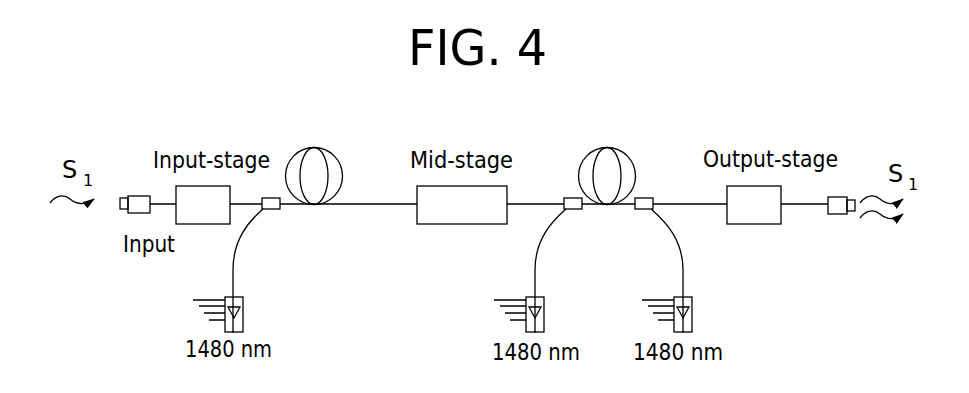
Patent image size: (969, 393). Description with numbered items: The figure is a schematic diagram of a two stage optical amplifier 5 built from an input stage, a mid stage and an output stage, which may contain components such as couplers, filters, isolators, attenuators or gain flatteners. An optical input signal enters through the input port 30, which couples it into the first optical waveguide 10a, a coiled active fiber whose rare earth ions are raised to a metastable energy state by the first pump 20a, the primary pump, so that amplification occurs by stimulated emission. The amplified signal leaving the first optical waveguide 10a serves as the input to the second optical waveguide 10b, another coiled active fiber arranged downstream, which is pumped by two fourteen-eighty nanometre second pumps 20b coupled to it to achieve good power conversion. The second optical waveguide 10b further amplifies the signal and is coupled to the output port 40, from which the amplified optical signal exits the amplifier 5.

The optical amplifier 5 is at (712, 121).
The first optical waveguide 10a is at (324, 136).
The second optical waveguide 10b is at (617, 134).
The first pump 20a is at (260, 309).
The second pump 20b is at (559, 311).
The input port 30 is at (137, 196).
The output port 40 is at (842, 197).